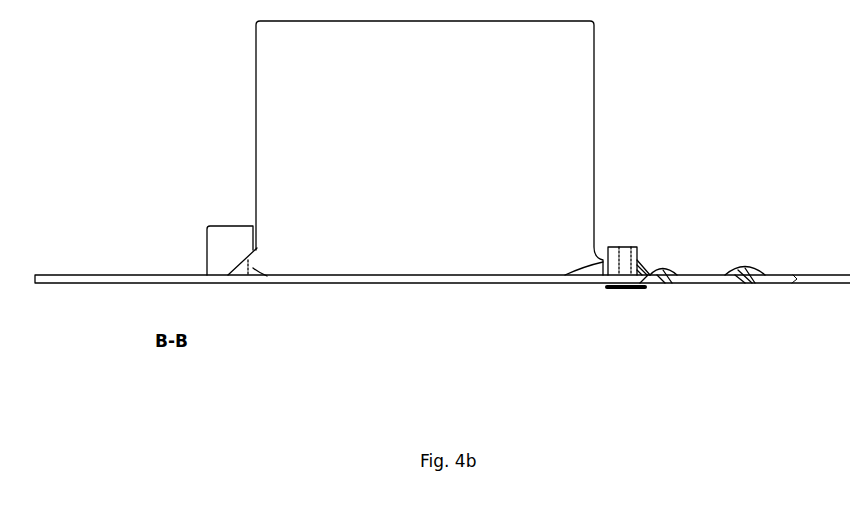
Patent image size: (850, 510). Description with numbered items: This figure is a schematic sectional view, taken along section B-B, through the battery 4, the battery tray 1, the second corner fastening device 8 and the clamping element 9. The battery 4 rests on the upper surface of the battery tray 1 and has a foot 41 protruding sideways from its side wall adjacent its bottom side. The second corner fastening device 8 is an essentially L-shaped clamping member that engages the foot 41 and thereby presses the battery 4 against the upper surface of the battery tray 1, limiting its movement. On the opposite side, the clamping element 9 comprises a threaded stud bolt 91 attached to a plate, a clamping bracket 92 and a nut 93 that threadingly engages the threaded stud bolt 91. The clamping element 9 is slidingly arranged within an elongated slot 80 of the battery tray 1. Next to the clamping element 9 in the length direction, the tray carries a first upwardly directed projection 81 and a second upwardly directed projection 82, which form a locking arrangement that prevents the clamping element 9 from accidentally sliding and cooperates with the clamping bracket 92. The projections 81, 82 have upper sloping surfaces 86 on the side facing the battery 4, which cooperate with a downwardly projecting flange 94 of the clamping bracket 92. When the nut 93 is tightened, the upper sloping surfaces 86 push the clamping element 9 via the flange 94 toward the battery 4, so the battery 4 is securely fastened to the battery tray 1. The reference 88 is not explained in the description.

The battery tray 1 is at (138, 275).
The battery 4 is at (580, 62).
The second corner fastening device 8 is at (227, 225).
The foot 41 is at (256, 278).
The clamping element 9 is at (677, 173).
The clamping bracket 92 is at (613, 248).
The nut 93 is at (638, 247).
The downwardly projecting flange 94 is at (642, 265).
The threaded stud bolt 91 is at (627, 287).
The elongated slot 80 is at (687, 280).
The first upwardly directed projection 81 is at (663, 275).
The upper sloping surface 86 is at (647, 283).
The second upwardly directed projection 82 is at (745, 272).
The second via 88 is at (740, 278).